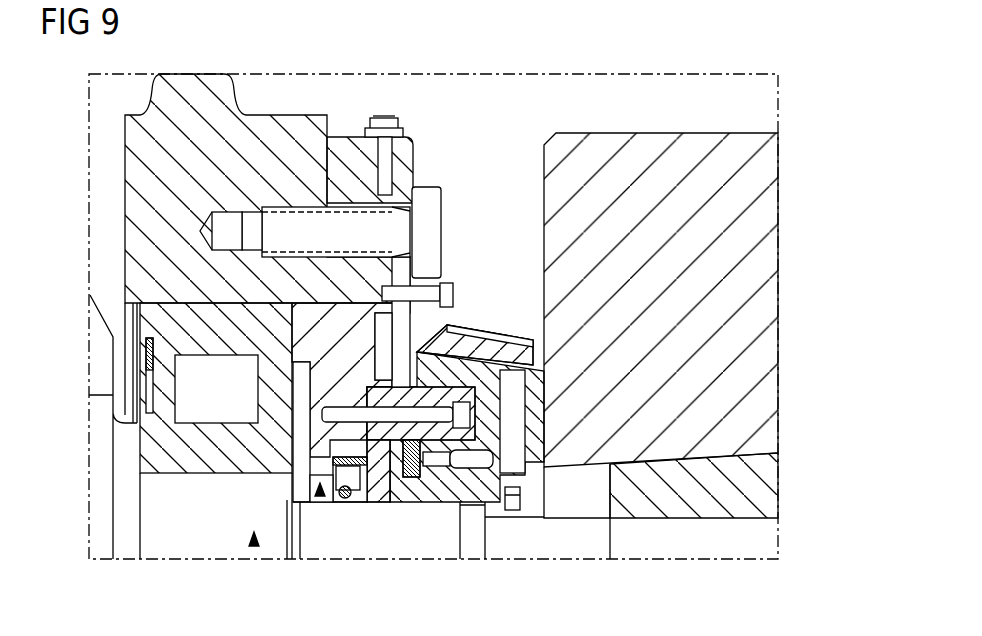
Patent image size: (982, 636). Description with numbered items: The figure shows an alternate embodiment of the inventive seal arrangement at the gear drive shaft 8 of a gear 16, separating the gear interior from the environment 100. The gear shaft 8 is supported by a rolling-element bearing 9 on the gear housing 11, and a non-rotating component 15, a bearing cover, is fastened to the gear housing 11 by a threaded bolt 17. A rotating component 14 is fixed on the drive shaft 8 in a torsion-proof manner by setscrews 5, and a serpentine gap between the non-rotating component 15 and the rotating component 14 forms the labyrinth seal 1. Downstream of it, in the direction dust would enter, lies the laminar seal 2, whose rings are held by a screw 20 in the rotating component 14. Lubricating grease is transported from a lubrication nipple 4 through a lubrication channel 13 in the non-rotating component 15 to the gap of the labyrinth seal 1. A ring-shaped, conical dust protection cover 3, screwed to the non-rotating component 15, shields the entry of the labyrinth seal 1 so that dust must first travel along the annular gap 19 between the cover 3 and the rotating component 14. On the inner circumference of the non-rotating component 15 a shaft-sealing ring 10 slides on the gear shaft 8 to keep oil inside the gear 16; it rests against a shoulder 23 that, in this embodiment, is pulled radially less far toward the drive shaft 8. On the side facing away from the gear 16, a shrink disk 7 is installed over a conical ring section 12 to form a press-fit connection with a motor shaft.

The labyrinth seal 1 is at (545, 385).
The laminar seal 2 is at (410, 470).
The dust protection cover 3 is at (513, 345).
The lubrication nipple 4 is at (379, 118).
The setscrews 5 is at (514, 510).
The shrink disk 7 is at (770, 210).
The gear drive shaft 8 is at (690, 548).
The rolling-element bearing 9 is at (224, 462).
The shaft-sealing ring 10 is at (365, 490).
The gear housing 11 is at (186, 95).
The conical ring section 12 is at (770, 481).
The lubrication channel 13 is at (383, 340).
The rotating component 14 is at (492, 502).
The non-rotating component 15 is at (345, 150).
The gear 16 is at (256, 545).
The threaded bolt 17 is at (428, 195).
The annular gap 19 is at (460, 342).
The screw 20 is at (437, 465).
The shoulder 23 is at (320, 496).
The environment 100 is at (512, 157).